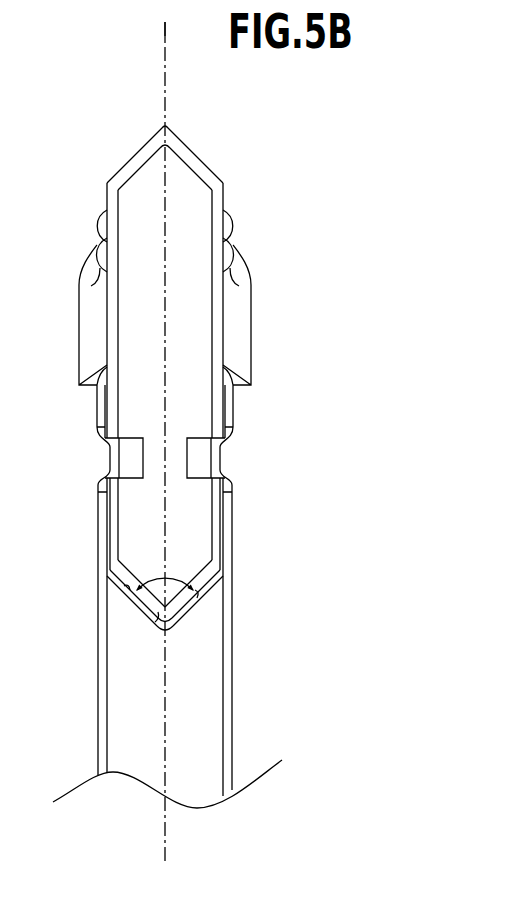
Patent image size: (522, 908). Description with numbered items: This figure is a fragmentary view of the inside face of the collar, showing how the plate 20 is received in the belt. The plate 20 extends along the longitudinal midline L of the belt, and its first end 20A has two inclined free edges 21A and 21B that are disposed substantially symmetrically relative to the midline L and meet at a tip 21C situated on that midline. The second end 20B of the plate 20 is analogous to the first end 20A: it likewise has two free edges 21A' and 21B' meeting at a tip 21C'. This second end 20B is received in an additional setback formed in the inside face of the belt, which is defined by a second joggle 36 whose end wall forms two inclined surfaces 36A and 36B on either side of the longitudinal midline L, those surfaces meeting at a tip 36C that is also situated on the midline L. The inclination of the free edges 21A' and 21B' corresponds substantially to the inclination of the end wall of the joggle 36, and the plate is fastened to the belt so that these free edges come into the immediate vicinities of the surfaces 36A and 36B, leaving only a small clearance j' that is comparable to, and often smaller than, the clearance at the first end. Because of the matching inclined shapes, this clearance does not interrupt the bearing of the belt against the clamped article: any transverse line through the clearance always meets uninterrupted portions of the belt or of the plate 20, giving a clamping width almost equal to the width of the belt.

The longitudinal midline L is at (170, 33).
The plate 20 is at (187, 333).
The first end of the plate 20A is at (155, 115).
The second end of the plate 20B is at (190, 540).
The inclined free edge 21A is at (117, 150).
The inclined free edge 21B is at (218, 156).
The tip 21C is at (188, 114).
The free edge 21A' is at (91, 601).
The free edge 21B' is at (237, 601).
The tip 21C' is at (224, 657).
The second joggle 36 is at (142, 570).
The inclined surface 36A is at (135, 595).
The inclined surface 36B is at (205, 598).
The tip 36C is at (150, 627).
The gap j' is at (159, 618).